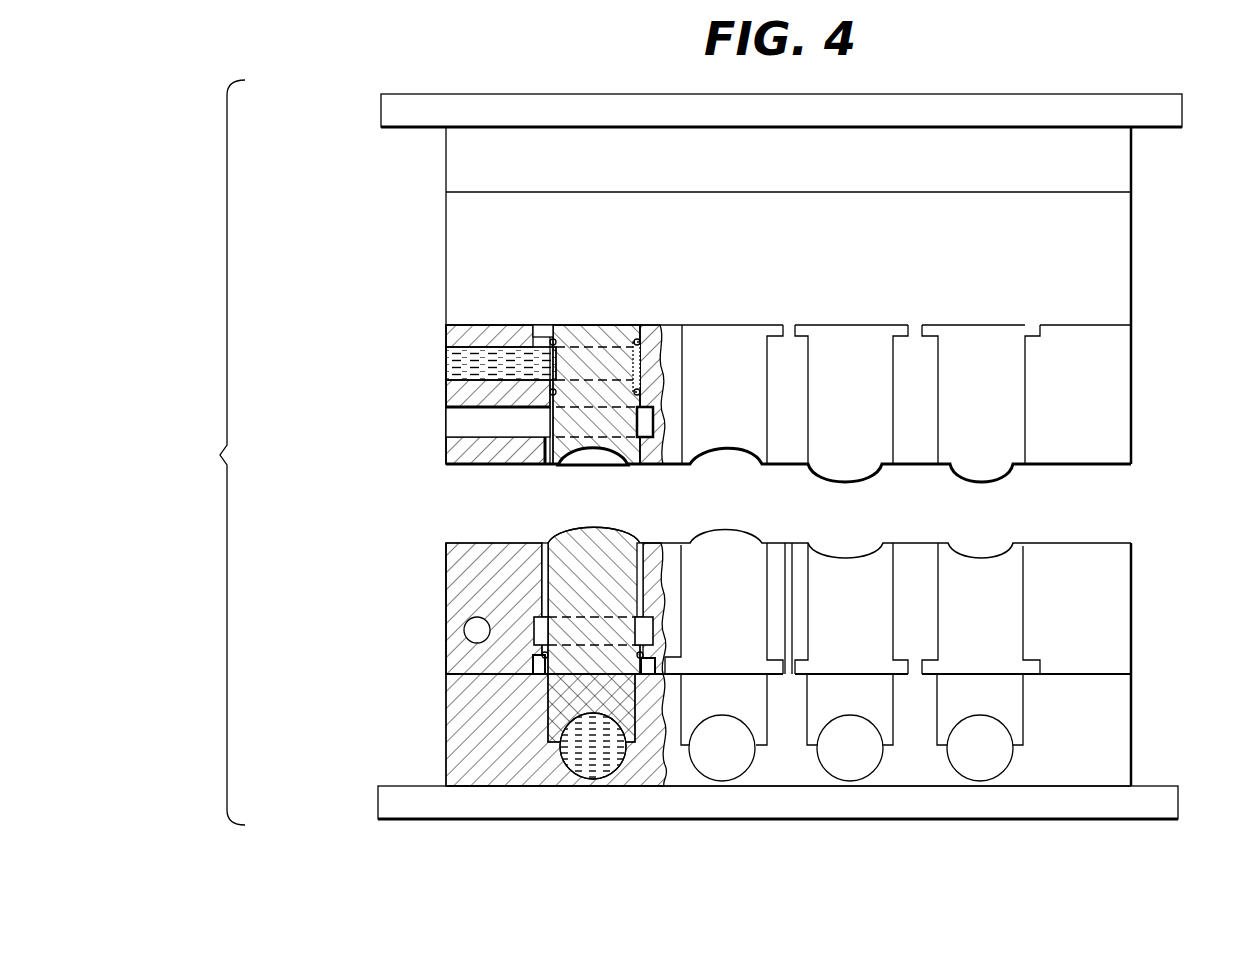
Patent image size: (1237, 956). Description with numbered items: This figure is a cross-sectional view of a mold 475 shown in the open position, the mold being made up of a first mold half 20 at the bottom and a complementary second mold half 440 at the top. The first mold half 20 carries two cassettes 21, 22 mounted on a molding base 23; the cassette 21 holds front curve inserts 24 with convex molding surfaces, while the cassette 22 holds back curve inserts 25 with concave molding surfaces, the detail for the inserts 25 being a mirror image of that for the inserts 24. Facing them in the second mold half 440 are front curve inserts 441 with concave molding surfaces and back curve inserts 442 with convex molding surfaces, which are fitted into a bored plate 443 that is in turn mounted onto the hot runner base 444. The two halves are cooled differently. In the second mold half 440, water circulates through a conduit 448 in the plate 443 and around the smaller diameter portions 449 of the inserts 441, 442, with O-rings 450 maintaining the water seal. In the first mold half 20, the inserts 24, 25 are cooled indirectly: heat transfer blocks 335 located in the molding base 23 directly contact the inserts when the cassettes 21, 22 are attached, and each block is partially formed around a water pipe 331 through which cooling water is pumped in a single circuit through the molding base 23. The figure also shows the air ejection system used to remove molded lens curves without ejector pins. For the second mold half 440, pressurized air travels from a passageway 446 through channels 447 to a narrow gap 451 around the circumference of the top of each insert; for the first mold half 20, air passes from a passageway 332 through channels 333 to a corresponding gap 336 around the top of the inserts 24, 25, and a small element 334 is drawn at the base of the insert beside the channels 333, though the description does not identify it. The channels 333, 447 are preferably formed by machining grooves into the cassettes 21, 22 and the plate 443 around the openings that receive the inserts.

The mold 475 is at (206, 452).
The second mold half 440 is at (350, 245).
The hot runner base 444 is at (1148, 112).
The plate 443 is at (1113, 400).
The back curve inserts 442 is at (882, 470).
The front curve inserts 441 is at (590, 447).
The smaller diameter portions 449 is at (657, 362).
The O-rings 450 is at (550, 391).
The conduit 448 is at (455, 365).
The passageway 446 is at (455, 415).
The channels 447 is at (550, 458).
The gap 451 is at (553, 466).
The first mold half 20 is at (325, 586).
The cassette 21 is at (455, 552).
The cassette 22 is at (1103, 557).
The molding base 23 is at (1148, 795).
The front curve inserts 24 is at (590, 531).
The back curve inserts 25 is at (843, 553).
The water pipe 331 is at (578, 770).
The passageway 332 is at (533, 626).
The channels 333 is at (540, 592).
The fastener 334 is at (540, 655).
The heat transfer blocks 335 is at (548, 722).
The gap 336 is at (545, 544).